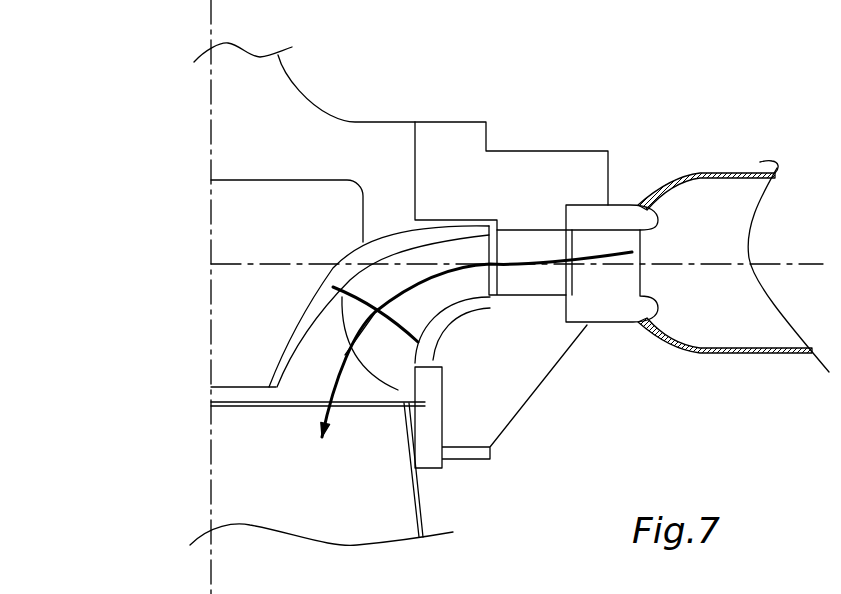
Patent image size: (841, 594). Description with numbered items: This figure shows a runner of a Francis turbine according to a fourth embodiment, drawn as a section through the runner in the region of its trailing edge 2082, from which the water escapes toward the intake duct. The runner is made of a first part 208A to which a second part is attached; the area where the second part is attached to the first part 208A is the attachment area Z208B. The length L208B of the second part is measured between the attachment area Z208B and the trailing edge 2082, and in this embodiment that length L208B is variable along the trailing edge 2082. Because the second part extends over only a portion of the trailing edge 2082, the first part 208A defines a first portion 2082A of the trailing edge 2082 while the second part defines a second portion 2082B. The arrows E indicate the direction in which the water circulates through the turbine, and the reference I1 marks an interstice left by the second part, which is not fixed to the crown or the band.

The first part of the runner 208A is at (467, 245).
The trailing edge 2082 is at (115, 363).
The first portion of the trailing edge 2082A is at (334, 303).
The second portion of the trailing edge 2082B is at (348, 323).
The length of the second part L208B is at (412, 301).
The attachment area Z208B is at (368, 330).
The water circulation direction arrows E is at (466, 354).
The interface between the intake and the structure I1 is at (400, 403).